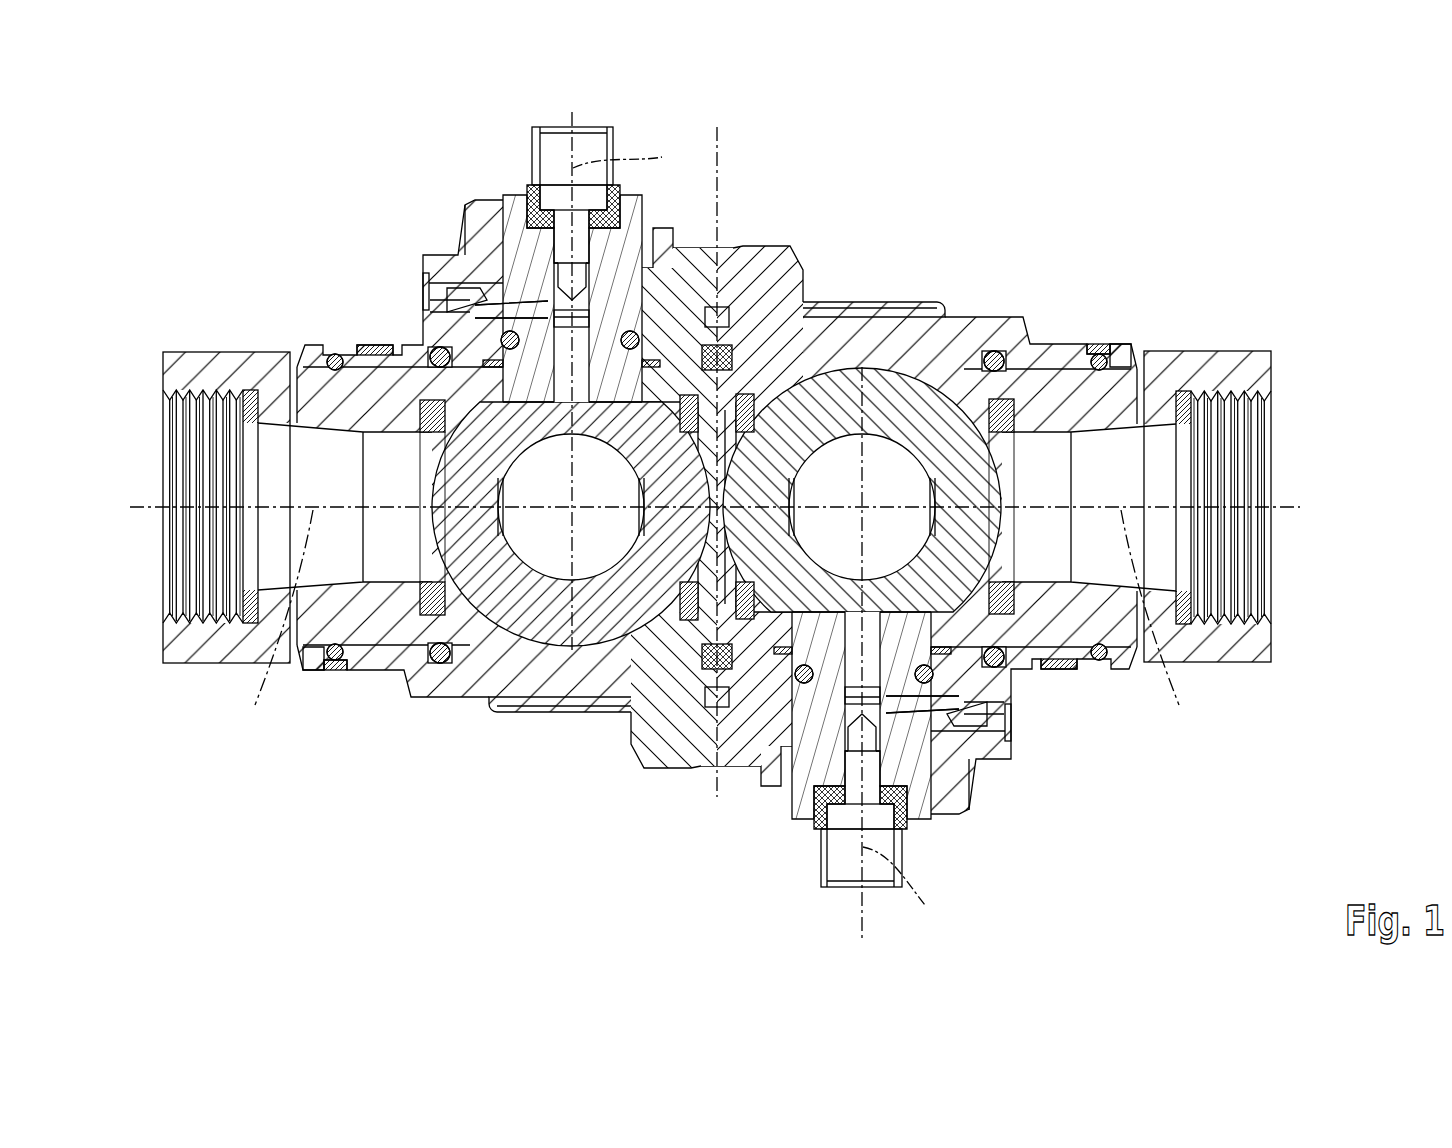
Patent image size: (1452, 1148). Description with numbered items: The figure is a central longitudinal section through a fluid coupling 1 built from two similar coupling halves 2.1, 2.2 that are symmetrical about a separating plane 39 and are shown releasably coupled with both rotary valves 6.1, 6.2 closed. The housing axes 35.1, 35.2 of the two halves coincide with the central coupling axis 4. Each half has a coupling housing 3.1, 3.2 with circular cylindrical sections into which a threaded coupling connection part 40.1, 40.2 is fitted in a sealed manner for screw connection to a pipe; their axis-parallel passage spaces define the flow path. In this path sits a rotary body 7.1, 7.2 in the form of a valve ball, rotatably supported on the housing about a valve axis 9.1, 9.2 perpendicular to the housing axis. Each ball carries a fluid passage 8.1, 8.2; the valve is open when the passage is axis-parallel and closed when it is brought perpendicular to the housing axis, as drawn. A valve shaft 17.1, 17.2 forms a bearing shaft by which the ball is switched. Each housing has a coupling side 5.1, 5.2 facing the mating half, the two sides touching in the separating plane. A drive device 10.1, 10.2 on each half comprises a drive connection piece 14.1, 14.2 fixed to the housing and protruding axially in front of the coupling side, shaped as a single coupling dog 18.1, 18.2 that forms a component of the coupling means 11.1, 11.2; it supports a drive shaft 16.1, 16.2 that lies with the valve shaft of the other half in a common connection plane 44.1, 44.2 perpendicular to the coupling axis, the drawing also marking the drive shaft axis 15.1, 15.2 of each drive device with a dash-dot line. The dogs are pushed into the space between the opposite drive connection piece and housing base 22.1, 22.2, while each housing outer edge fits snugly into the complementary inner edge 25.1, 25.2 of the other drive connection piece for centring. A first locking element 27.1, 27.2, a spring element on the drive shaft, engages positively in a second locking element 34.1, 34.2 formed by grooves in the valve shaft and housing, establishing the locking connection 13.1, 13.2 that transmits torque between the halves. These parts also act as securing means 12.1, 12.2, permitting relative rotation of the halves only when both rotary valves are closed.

The fluid coupling 1 is at (1014, 130).
The coupling half 2.1 is at (320, 194).
The coupling half 2.2 is at (1062, 241).
The coupling housing 3.1 is at (410, 700).
The coupling housing 3.2 is at (1131, 345).
The coupling axis 4 is at (1285, 505).
The coupling side 5.1 is at (734, 300).
The coupling side 5.2 is at (702, 688).
The rotary valve 6.1 is at (580, 676).
The rotary valve 6.2 is at (937, 346).
The rotary body 7.1 is at (528, 618).
The rotary body 7.2 is at (892, 366).
The fluid passage 8.1 is at (551, 497).
The fluid passage 8.2 is at (848, 497).
The valve axis 9.1 is at (500, 710).
The valve axis 9.2 is at (876, 310).
The drive device 10.1 is at (843, 893).
The drive device 10.2 is at (560, 118).
The coupling means 11.1 is at (454, 296).
The coupling means 11.2 is at (977, 715).
The securing means 12.1 is at (474, 312).
The securing means 12.2 is at (860, 702).
The locking connection 13.1 is at (511, 309).
The locking connection 13.2 is at (922, 704).
The drive connection piece 14.1 is at (966, 790).
The drive connection piece 14.2 is at (423, 263).
The first bolt axis 15.1 is at (866, 897).
The second bolt axis 15.2 is at (578, 118).
The drive shaft 16.1 is at (820, 815).
The drive shaft 16.2 is at (514, 194).
The valve shaft 17.1 is at (728, 290).
The valve shaft 17.2 is at (986, 765).
The coupling dog 18.1 is at (957, 816).
The coupling dog 18.2 is at (470, 200).
The housing base 22.1 is at (453, 288).
The housing base 22.2 is at (1010, 700).
The inner edge 25.1 is at (712, 775).
The inner edge 25.2 is at (790, 266).
The first locking element 27.1 is at (905, 715).
The first locking element 27.2 is at (558, 296).
The second locking element 34.1 is at (556, 316).
The second locking element 34.2 is at (850, 706).
The housing axis 35.1 is at (267, 620).
The housing axis 35.2 is at (1161, 616).
The separating plane 39 is at (722, 160).
The coupling connection part 40.1 is at (196, 350).
The coupling connection part 40.2 is at (1226, 352).
The connection plane 44.1 is at (639, 157).
The connection plane 44.2 is at (920, 885).